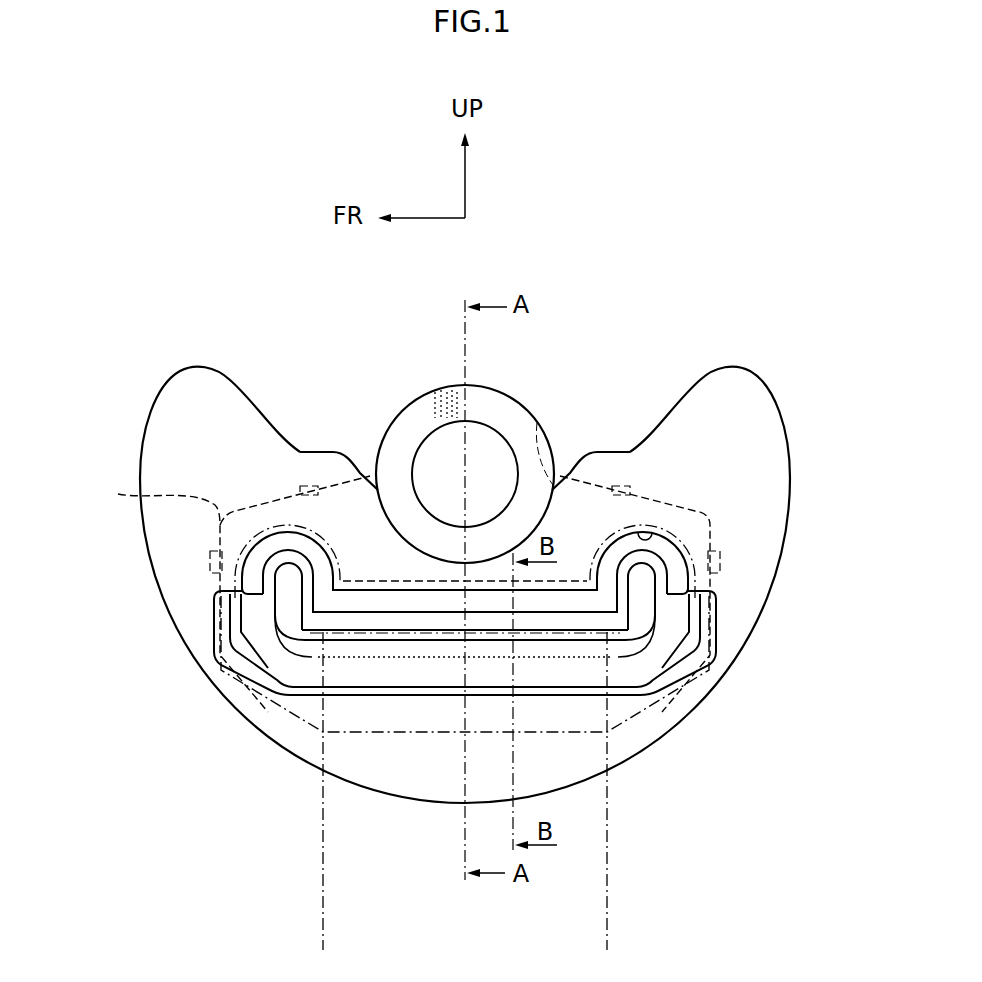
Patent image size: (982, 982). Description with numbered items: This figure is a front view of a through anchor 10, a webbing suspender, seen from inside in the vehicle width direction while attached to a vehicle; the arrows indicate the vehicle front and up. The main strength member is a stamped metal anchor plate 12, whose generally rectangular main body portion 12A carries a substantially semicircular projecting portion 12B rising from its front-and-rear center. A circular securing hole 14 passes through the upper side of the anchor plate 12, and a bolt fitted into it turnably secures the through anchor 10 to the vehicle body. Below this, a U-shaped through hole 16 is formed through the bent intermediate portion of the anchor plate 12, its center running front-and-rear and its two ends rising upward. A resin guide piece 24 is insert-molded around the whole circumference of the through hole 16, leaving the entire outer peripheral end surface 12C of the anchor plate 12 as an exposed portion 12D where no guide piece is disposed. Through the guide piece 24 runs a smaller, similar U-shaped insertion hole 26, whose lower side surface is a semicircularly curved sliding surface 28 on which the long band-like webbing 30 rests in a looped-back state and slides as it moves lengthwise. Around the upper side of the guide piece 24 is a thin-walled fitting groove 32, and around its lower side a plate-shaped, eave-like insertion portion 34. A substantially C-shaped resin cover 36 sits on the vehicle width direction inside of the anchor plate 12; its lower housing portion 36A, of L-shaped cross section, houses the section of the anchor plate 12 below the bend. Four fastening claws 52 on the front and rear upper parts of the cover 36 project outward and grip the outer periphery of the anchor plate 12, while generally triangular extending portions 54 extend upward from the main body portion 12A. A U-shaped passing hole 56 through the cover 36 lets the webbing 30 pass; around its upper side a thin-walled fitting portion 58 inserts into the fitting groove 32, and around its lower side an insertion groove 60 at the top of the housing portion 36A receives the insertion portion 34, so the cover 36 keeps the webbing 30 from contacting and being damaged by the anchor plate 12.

The through anchor 10 is at (222, 294).
The anchor plate 12 is at (390, 412).
The main body portion 12A is at (140, 498).
The projecting portion 12B is at (538, 422).
The outer peripheral end surface 12C is at (714, 584).
The exposed portion 12D is at (285, 716).
The securing hole 14 is at (483, 437).
The through hole 16 is at (373, 612).
The guide piece 24 is at (262, 661).
The insertion hole 26 is at (568, 630).
The sliding surface 28 is at (427, 652).
The webbing 30 is at (322, 884).
The fitting groove 32 is at (350, 604).
The insertion portion 34 is at (552, 696).
The cover 36 is at (733, 360).
The housing portion 36A is at (430, 718).
The fastening claws 52 is at (308, 486).
The extending portions 54 is at (240, 380).
The passing hole 56 is at (399, 596).
The fitting portion 58 is at (652, 535).
The insertion groove 60 is at (672, 664).